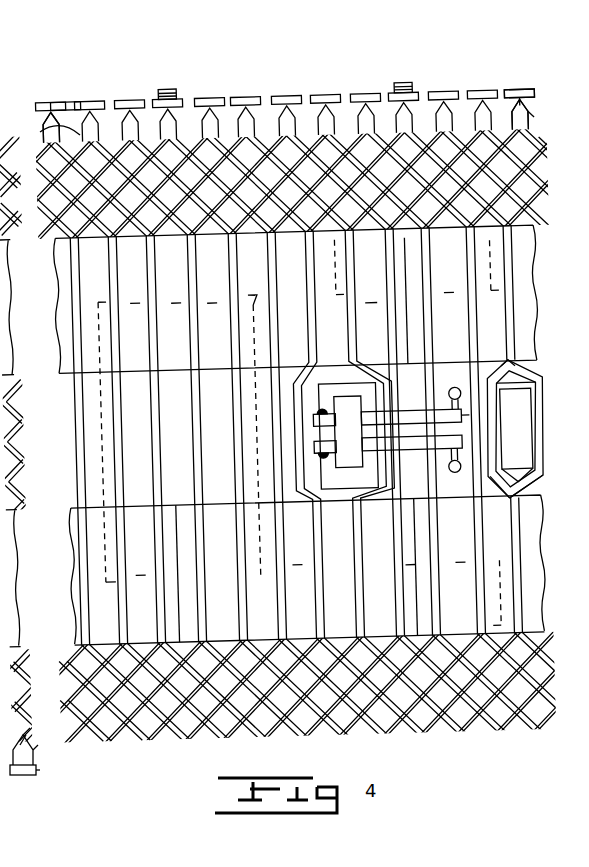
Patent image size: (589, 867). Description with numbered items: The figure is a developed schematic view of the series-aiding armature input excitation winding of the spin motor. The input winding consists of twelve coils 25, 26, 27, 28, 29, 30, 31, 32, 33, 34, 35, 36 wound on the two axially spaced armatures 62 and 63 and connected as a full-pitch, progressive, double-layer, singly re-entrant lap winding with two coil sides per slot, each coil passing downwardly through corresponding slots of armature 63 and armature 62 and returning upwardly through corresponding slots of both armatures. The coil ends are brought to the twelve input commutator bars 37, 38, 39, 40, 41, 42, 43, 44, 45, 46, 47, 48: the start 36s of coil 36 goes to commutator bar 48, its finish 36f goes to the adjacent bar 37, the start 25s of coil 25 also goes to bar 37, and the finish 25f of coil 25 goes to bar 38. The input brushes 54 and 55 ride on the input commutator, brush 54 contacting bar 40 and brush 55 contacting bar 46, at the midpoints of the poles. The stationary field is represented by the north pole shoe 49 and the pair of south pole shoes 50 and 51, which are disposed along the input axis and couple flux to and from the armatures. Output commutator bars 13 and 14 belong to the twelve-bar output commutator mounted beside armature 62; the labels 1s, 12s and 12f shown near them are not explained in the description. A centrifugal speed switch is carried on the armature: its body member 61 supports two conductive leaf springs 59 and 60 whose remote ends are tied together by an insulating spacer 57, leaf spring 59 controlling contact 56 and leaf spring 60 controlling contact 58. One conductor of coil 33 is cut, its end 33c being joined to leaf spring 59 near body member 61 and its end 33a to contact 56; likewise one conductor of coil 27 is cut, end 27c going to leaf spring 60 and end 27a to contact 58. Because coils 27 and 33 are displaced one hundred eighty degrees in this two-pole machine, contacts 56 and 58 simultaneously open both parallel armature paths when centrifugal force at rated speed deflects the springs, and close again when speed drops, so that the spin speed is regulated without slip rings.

The conductor start end 1s is at (36, 775).
The conductor finish end 12f is at (27, 740).
The conductor start end 12s is at (33, 752).
The output commutator bar 13 is at (24, 776).
The output commutator bar 14 is at (18, 769).
The coil 25 is at (95, 746).
The coil 26 is at (134, 746).
The coil 27 is at (173, 746).
The coil 28 is at (211, 746).
The coil 29 is at (249, 746).
The coil 30 is at (290, 746).
The coil 31 is at (331, 746).
The coil 32 is at (370, 746).
The coil 33 is at (408, 746).
The coil 34 is at (448, 746).
The coil 35 is at (488, 746).
The coil 36 is at (524, 746).
The start of coil 25 25s is at (530, 98).
The finish of coil 25 25f is at (44, 131).
The start of coil 36 36s is at (525, 130).
The finish of coil 36 36f is at (535, 125).
The cut conductor end of coil 27 27a is at (462, 475).
The cut conductor end of coil 27 27c is at (535, 505).
The cut conductor end of coil 33 33a is at (522, 393).
The cut conductor end of coil 33 33c is at (522, 368).
The input commutator bar 37 is at (55, 102).
The input commutator bar 38 is at (94, 101).
The input commutator bar 39 is at (133, 100).
The input commutator bar 40 is at (174, 99).
The input commutator bar 41 is at (213, 98).
The input commutator bar 42 is at (249, 97).
The input commutator bar 43 is at (290, 96).
The input commutator bar 44 is at (329, 95).
The input commutator bar 45 is at (369, 94).
The input commutator bar 46 is at (408, 94).
The input commutator bar 47 is at (447, 92).
The input commutator bar 48 is at (486, 91).
The north pole shoe 49 is at (176, 578).
The south pole shoe 50 is at (426, 553).
The south pole shoe 51 is at (403, 300).
The input brush 54 is at (170, 89).
The input brush 55 is at (407, 82).
The switch contact 56 is at (470, 398).
The insulating spacer 57 is at (465, 418).
The switch contact 58 is at (470, 457).
The leaf spring member 59 is at (414, 406).
The leaf spring member 60 is at (420, 450).
The centrifugal switch body member 61 is at (352, 470).
The armature 62 is at (558, 556).
The armature 63 is at (542, 270).